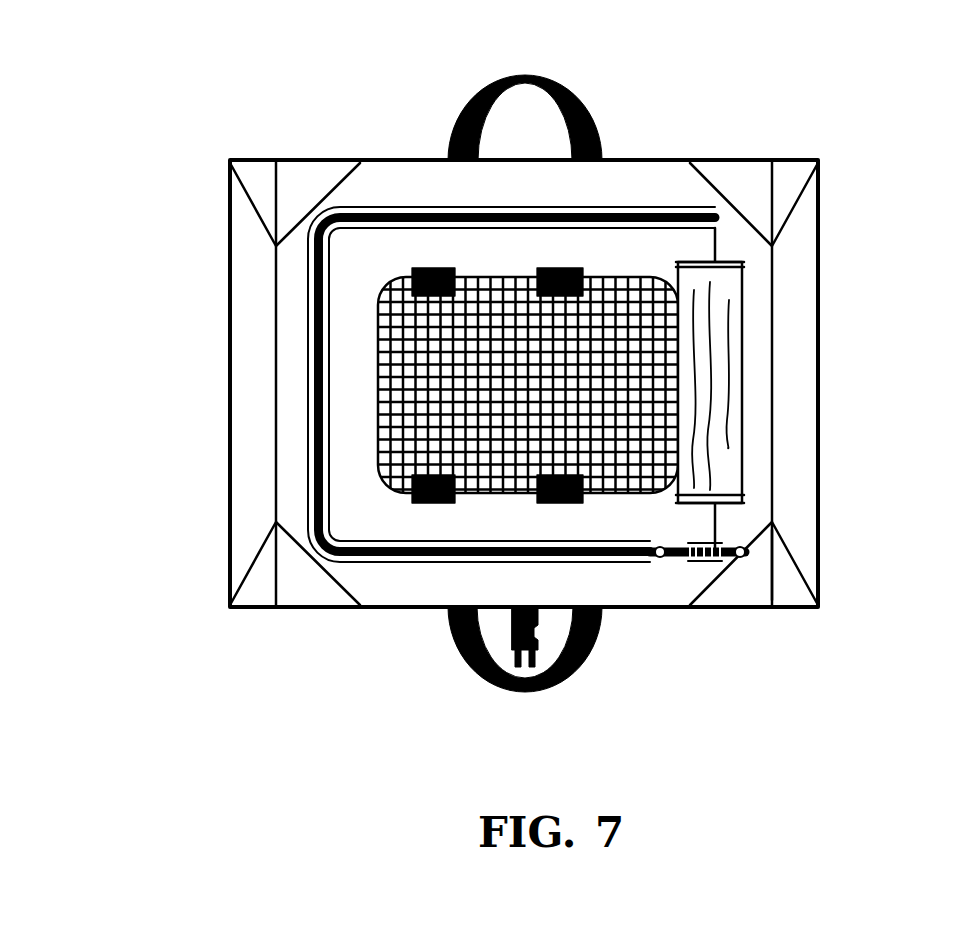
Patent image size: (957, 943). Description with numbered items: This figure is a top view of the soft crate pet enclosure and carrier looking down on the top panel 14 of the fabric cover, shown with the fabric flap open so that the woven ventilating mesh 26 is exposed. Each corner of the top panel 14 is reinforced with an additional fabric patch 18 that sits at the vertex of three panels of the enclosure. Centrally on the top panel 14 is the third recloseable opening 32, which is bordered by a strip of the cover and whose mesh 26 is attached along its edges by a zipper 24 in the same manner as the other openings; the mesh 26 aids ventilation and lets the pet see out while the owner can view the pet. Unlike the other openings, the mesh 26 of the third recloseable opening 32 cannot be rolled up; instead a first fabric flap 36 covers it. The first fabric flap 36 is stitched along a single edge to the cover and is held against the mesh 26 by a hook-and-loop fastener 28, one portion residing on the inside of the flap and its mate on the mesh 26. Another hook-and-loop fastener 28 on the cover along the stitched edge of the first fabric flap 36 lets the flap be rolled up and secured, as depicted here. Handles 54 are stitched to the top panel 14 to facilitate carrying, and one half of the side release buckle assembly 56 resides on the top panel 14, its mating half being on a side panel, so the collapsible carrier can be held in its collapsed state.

The top panel 14 is at (386, 172).
The fabric patch 18 is at (780, 585).
The zipper 24 is at (316, 490).
The woven ventilating mesh 26 is at (637, 437).
The hook-and-loop fastener 28 is at (432, 500).
The third recloseable opening 32 is at (607, 207).
The first fabric flap 36 is at (731, 358).
The handles 54 is at (470, 105).
The side release buckle assembly 56 is at (535, 660).